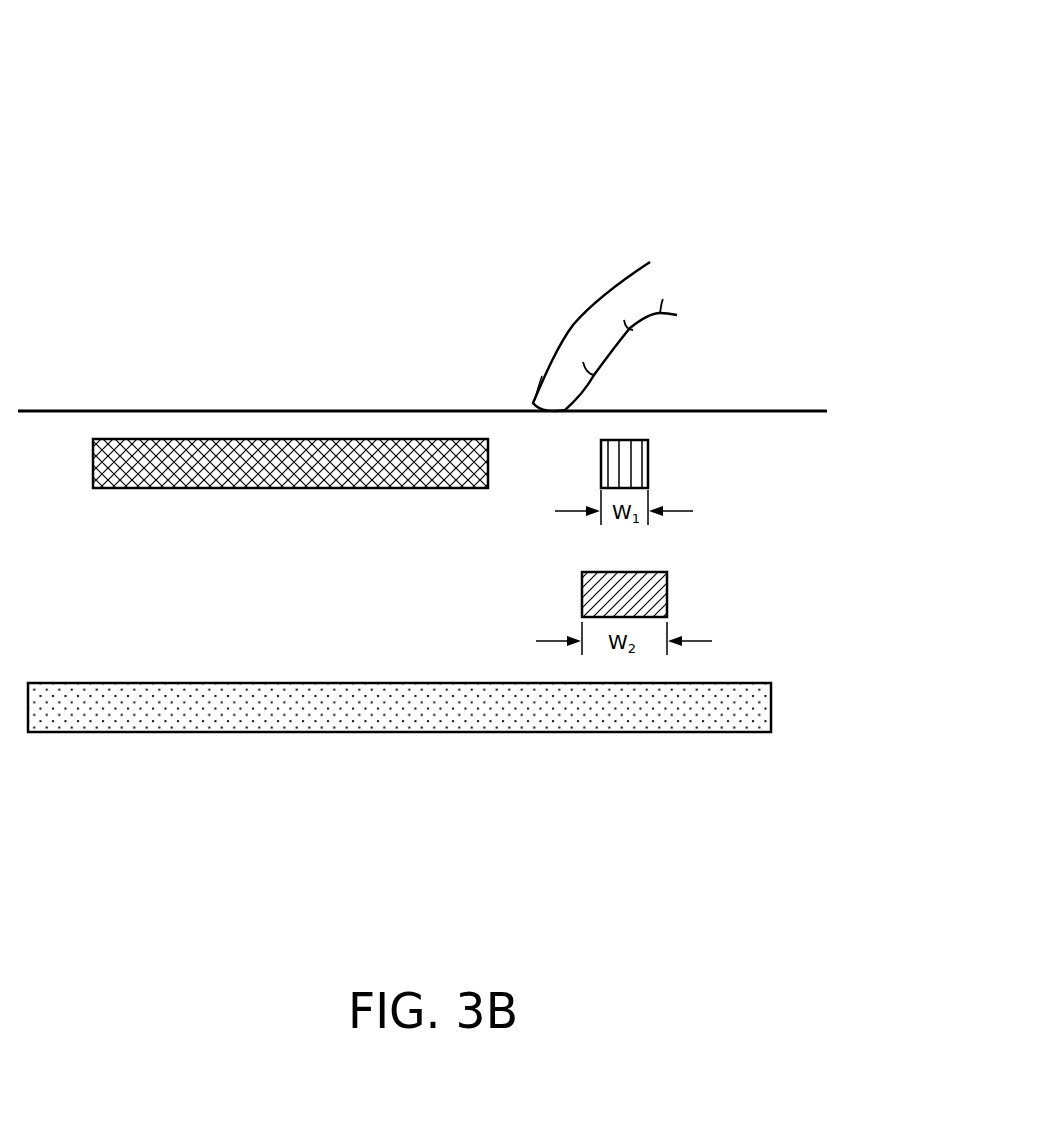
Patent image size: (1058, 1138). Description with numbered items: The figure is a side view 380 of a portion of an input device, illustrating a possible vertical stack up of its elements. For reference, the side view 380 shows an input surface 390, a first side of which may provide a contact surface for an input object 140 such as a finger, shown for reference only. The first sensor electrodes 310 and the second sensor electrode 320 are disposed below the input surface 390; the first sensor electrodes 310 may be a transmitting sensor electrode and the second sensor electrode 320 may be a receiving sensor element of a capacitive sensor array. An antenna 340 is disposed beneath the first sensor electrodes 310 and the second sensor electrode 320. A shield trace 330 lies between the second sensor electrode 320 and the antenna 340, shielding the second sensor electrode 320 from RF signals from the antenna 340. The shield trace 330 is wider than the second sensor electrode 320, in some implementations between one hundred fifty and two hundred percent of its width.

The side view 380 is at (619, 73).
The input object 140 is at (572, 324).
The input surface 390 is at (768, 410).
The first sensor electrodes 310 is at (175, 489).
The second sensor electrode 320 is at (648, 465).
The shield trace 330 is at (582, 592).
The antenna 340 is at (565, 732).